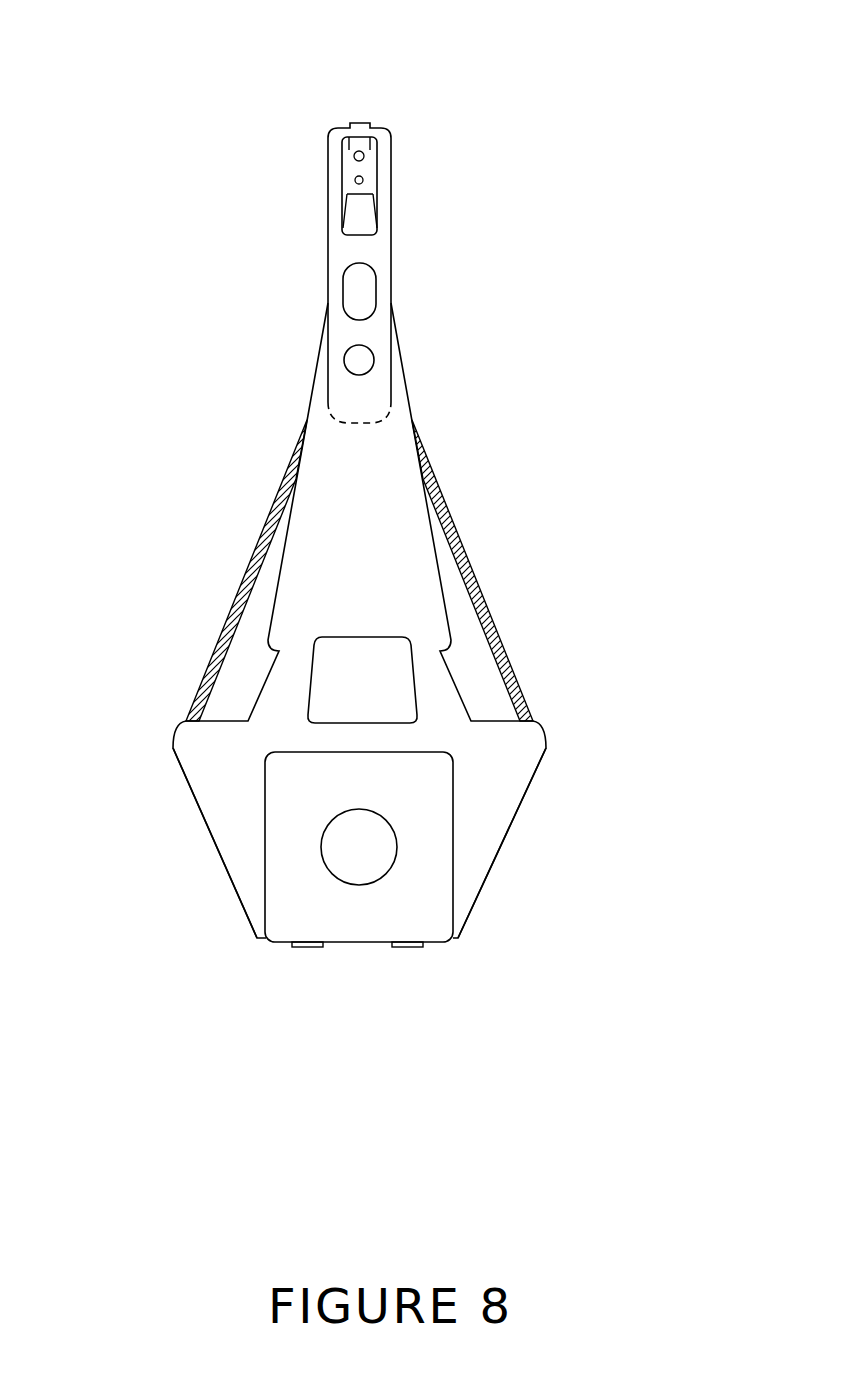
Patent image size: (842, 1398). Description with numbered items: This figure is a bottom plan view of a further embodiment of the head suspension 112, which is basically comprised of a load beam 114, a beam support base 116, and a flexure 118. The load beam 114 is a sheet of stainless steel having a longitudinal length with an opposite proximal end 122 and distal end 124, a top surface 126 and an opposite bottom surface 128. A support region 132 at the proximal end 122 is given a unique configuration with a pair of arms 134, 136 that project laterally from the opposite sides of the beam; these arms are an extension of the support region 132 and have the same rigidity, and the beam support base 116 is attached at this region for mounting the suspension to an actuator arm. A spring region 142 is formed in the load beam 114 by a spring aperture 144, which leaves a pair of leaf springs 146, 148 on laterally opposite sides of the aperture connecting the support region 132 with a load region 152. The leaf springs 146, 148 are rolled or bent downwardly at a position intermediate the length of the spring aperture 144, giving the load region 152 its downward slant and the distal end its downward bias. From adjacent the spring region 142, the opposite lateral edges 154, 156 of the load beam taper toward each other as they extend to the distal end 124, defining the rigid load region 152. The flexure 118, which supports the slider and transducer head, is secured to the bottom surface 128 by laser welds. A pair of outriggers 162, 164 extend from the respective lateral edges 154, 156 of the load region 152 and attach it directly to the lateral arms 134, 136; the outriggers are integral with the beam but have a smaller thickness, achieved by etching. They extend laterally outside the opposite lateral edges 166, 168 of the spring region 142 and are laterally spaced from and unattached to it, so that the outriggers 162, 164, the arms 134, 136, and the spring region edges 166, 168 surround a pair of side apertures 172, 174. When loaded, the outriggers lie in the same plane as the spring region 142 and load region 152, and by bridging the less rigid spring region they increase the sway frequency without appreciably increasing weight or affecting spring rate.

The head suspension 112 is at (560, 461).
The load beam 114 is at (391, 468).
The beam support base 116 is at (429, 907).
The flexure 118 is at (378, 250).
The proximal end 122 is at (363, 952).
The distal end 124 is at (343, 110).
The top surface 126 is at (342, 443).
The bottom surface 128 is at (340, 465).
The support region 132 is at (477, 833).
The arm 134 is at (205, 752).
The arm 136 is at (542, 738).
The spring region 142 is at (262, 690).
The spring aperture 144 is at (328, 705).
The leaf spring 146 is at (285, 702).
The leaf spring 148 is at (447, 722).
The load region 152 is at (337, 498).
The lateral edge 154 is at (317, 350).
The lateral edge 156 is at (403, 362).
The outrigger 162 is at (250, 555).
The outrigger 164 is at (462, 548).
The lateral edge of spring region 166 is at (268, 675).
The lateral edge of spring region 168 is at (450, 682).
The side aperture 172 is at (262, 617).
The side aperture 174 is at (467, 637).